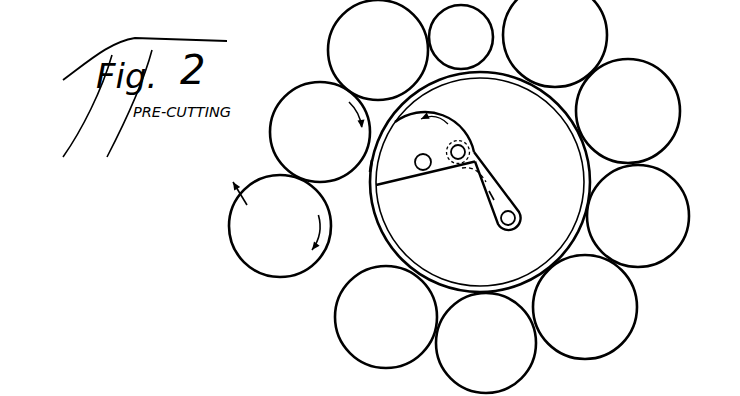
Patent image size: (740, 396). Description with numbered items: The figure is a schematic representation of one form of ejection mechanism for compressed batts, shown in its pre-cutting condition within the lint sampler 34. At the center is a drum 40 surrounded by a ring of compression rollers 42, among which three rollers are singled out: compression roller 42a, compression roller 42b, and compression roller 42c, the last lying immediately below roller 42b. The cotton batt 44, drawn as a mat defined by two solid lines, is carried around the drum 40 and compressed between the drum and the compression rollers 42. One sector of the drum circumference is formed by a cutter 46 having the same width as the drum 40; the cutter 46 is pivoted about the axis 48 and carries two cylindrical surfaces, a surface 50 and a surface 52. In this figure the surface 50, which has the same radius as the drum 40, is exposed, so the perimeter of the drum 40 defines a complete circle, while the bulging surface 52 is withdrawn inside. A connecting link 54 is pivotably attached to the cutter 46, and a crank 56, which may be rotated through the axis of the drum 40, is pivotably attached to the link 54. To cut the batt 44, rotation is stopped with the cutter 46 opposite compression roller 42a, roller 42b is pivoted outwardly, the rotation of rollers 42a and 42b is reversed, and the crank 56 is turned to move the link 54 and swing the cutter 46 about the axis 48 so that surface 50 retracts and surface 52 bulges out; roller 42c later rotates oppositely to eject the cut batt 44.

The lint sampler 34 is at (216, 213).
The drum 40 is at (471, 244).
The compression rollers 42 is at (388, 57).
The compression roller 42a is at (325, 141).
The compression roller 42b is at (280, 226).
The compression roller 42c is at (396, 322).
The cotton batt 44 is at (558, 113).
The cutter 46 is at (422, 149).
The axis 48 is at (426, 170).
The cylindrical surface 50 is at (368, 172).
The cylindrical surface 52 is at (447, 118).
The connecting link 54 is at (482, 157).
The crank 56 is at (498, 190).